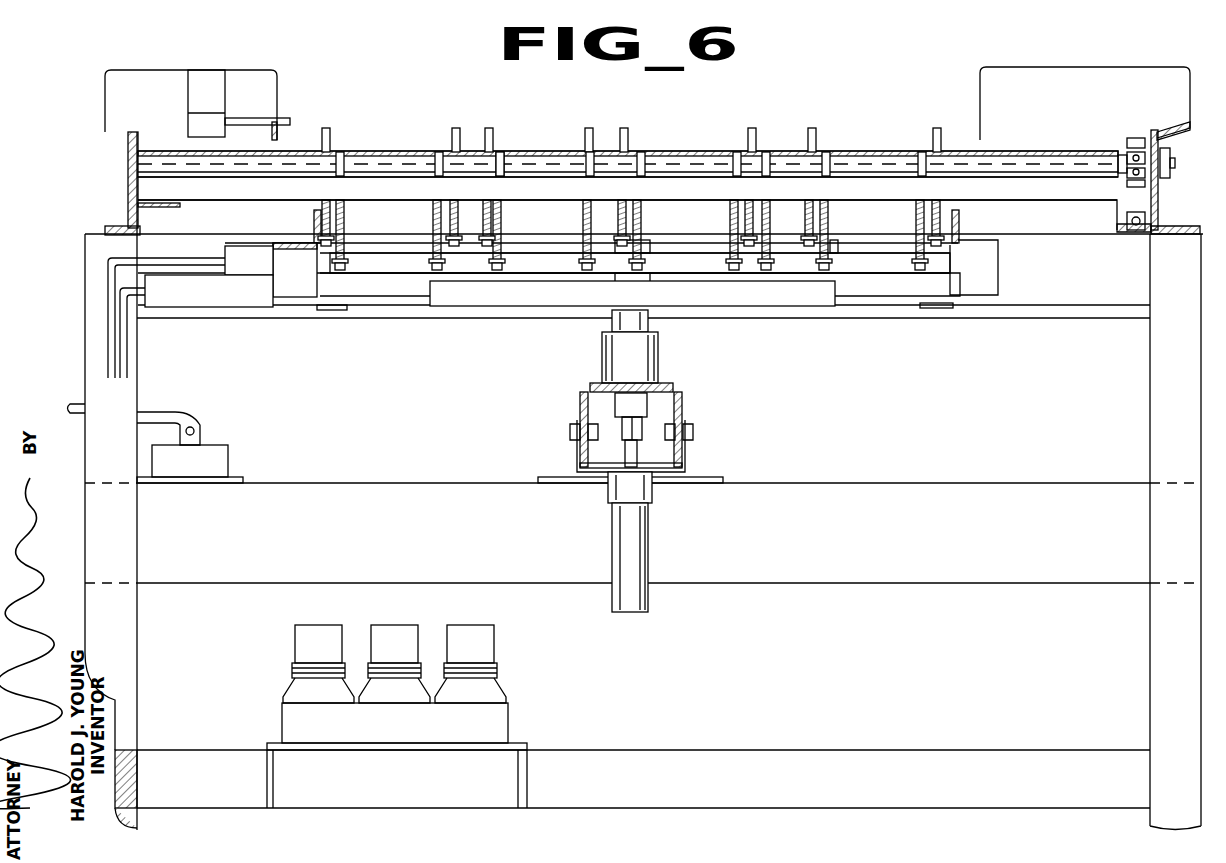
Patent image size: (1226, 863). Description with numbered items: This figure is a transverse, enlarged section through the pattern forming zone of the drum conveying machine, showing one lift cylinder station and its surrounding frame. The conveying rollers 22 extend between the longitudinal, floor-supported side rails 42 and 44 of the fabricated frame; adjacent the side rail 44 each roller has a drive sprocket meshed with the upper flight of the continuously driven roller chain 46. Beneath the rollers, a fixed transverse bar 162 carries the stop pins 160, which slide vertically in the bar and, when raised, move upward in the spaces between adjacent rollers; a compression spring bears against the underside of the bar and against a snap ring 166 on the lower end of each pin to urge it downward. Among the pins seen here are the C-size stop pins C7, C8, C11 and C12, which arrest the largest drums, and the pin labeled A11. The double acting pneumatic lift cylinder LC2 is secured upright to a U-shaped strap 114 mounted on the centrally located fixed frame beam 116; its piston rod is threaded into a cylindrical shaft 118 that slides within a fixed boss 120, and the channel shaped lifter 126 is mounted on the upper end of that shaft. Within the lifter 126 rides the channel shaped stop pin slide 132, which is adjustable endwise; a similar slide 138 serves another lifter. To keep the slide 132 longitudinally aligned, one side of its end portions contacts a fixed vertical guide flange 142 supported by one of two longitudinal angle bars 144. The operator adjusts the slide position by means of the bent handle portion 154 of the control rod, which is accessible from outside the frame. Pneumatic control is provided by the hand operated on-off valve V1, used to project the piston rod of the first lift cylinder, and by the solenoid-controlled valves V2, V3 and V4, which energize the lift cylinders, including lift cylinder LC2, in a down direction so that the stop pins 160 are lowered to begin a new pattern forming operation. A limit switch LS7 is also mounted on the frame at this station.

The limit switch LS7 is at (188, 120).
The stop pins 160 is at (340, 150).
The stop pin C7 is at (344, 162).
The stop pin C8 is at (504, 165).
The cam actuator A11 is at (531, 131).
The stop pin C11 is at (770, 162).
The stop pin C12 is at (920, 160).
The conveying rollers 22 is at (138, 156).
The fixed transverse bars 162 is at (148, 194).
The side rail 42 is at (128, 226).
The side rail 44 is at (1165, 227).
The roller chain 46 is at (1134, 138).
The bent handle portion 154 is at (115, 291).
The longitudinal angle bars 144 is at (314, 222).
The fixed vertical guide flange 142 is at (290, 290).
The stop pin slide 138 is at (893, 255).
The stop pin slide 132 is at (380, 298).
The lifter 126 is at (514, 300).
The snap ring 166 is at (772, 268).
The fixed boss 120 is at (660, 358).
The fixed frame beam 116 is at (680, 404).
The cylindrical shaft 118 is at (620, 404).
The U-shaped strap 114 is at (690, 445).
The lift cylinder LC2 is at (650, 545).
The hand operated on-off valve V1 is at (216, 456).
The valve V2 is at (305, 690).
The valve V3 is at (381, 690).
The valve V4 is at (456, 690).